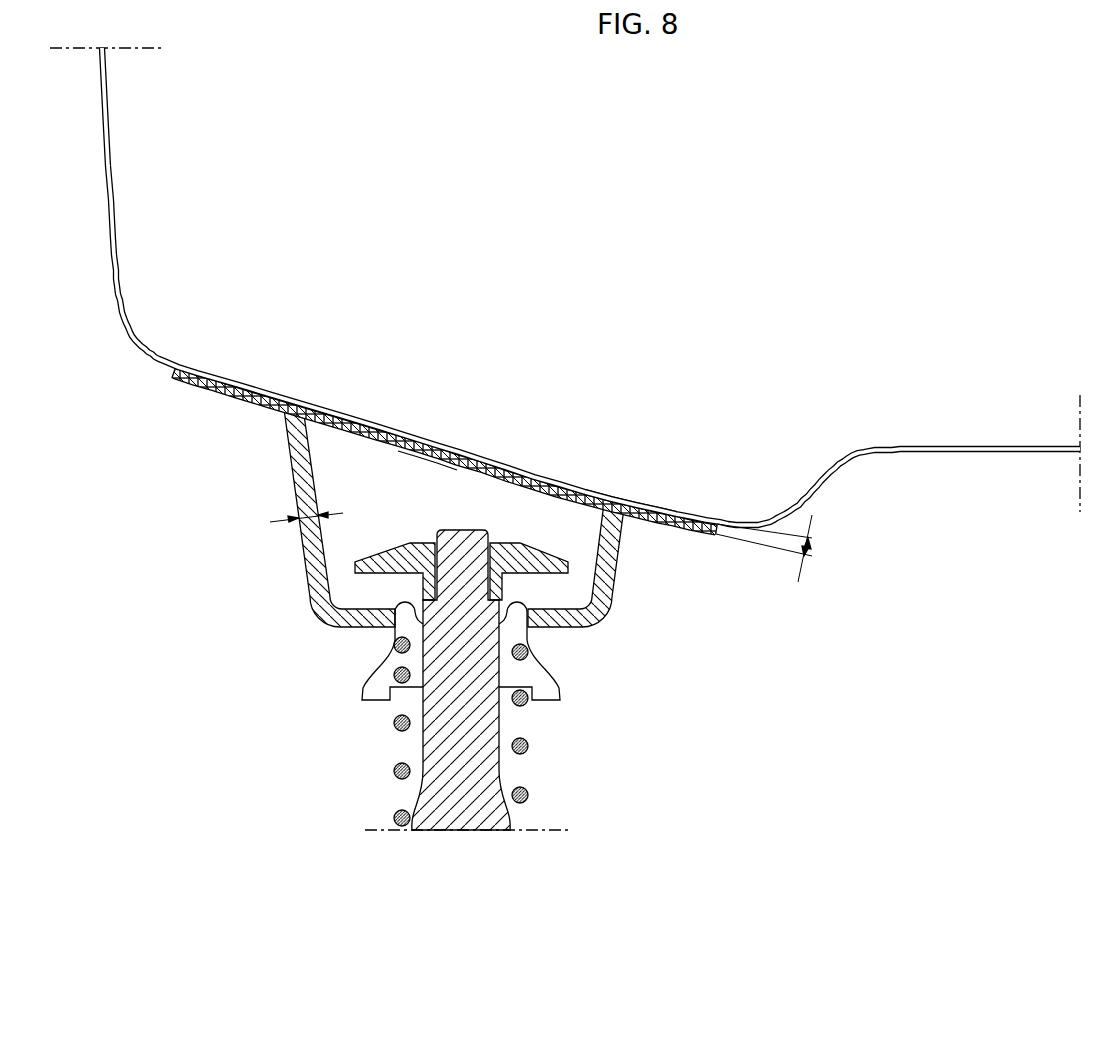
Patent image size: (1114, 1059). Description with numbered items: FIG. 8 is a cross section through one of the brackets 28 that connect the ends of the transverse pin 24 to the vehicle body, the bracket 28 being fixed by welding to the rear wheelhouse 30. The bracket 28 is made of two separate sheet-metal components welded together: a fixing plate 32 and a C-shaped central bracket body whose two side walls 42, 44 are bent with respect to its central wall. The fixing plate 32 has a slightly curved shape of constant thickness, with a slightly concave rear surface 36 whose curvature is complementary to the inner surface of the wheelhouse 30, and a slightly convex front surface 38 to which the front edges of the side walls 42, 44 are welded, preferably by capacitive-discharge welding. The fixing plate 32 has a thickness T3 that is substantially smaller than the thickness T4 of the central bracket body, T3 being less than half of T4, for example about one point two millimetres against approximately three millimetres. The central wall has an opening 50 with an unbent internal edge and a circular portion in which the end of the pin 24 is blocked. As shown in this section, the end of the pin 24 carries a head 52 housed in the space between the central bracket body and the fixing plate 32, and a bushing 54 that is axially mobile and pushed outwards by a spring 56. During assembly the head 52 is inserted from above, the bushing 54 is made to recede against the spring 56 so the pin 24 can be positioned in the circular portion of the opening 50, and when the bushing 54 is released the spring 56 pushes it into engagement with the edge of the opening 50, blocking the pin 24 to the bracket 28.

The transverse pin 24 is at (487, 768).
The bracket 28 is at (298, 627).
The rear wheelhouse 30 is at (135, 338).
The fixing plate 32 is at (414, 446).
The rear surface 36 is at (638, 503).
The front surface 38 is at (443, 466).
The side wall 42 is at (305, 565).
The side wall 44 is at (620, 557).
The opening 50 is at (528, 613).
The head 52 is at (388, 553).
The bushing 54 is at (548, 688).
The spring 56 is at (393, 768).
The thickness of the fixing plate T3 is at (781, 548).
The thickness of the central bracket body T4 is at (299, 506).